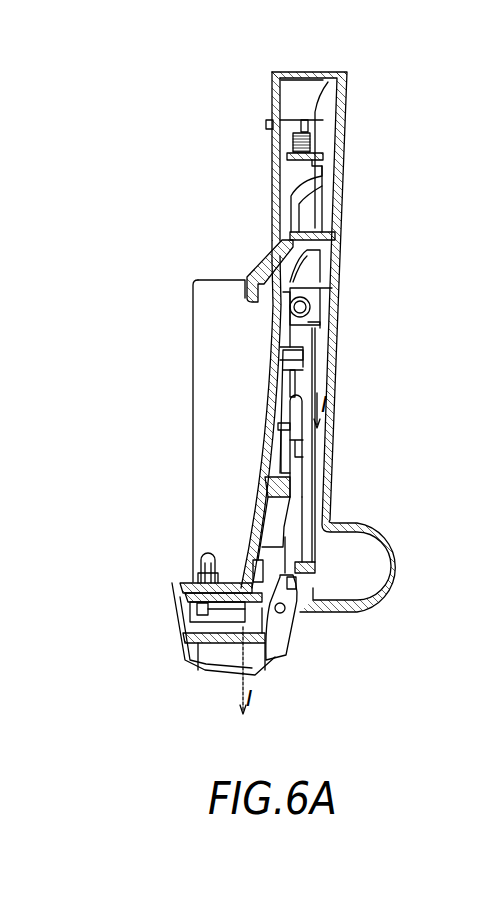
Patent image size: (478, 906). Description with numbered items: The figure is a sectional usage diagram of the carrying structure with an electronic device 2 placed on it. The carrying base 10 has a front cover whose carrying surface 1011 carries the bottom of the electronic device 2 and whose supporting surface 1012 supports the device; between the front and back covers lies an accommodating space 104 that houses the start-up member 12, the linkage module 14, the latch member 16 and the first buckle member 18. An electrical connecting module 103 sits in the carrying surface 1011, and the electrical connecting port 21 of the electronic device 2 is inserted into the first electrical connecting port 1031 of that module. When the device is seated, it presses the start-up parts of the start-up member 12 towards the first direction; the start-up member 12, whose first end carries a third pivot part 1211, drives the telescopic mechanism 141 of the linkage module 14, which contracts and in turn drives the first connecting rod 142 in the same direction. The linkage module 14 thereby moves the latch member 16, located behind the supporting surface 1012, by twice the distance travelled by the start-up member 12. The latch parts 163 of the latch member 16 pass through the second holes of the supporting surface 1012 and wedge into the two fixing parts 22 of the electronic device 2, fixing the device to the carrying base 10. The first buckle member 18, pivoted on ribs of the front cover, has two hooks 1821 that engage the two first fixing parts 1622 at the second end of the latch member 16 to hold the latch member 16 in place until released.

The carrying base 10 is at (197, 97).
The accommodating space 104 is at (308, 92).
The supporting surface 1012 is at (273, 178).
The latch parts 163 is at (258, 272).
The fixing parts 22 is at (242, 280).
The electronic device 2 is at (193, 432).
The latch member 16 is at (313, 358).
The first connecting rod 142 is at (296, 383).
The telescopic mechanism 141 is at (301, 438).
The linkage module 14 is at (277, 452).
The start-up member 12 is at (282, 527).
The electrical connecting port 21 is at (200, 566).
The first electrical connecting port 1031 is at (204, 574).
The carrying surface 1011 is at (181, 583).
The electrical connecting module 103 is at (188, 594).
The third pivot part 1211 is at (188, 615).
The hooks 1821 is at (295, 585).
The first fixing parts 1622 is at (305, 574).
The first buckle member 18 is at (284, 624).